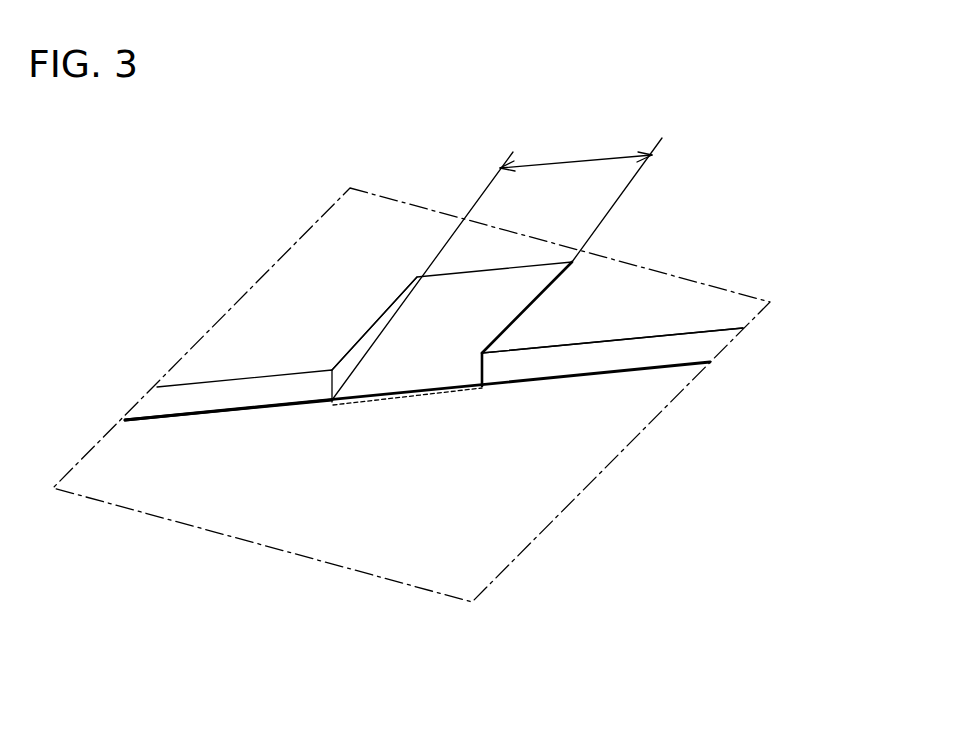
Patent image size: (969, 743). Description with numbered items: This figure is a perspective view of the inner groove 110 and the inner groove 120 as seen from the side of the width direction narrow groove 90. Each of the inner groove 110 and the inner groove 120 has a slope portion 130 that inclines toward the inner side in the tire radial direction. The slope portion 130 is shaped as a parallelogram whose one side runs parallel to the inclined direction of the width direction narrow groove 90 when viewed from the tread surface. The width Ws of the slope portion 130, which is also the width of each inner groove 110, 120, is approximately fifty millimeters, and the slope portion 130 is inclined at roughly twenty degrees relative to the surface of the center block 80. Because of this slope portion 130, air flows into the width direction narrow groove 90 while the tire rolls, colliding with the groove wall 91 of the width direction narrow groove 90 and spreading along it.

The center block 80 is at (398, 560).
The width direction narrow groove 90 is at (558, 363).
The groove wall 91 is at (264, 403).
The inner groove 110 is at (548, 310).
The inner groove 120 is at (561, 306).
The slope portion 130 is at (442, 335).
The width of the slope portion Ws is at (567, 162).